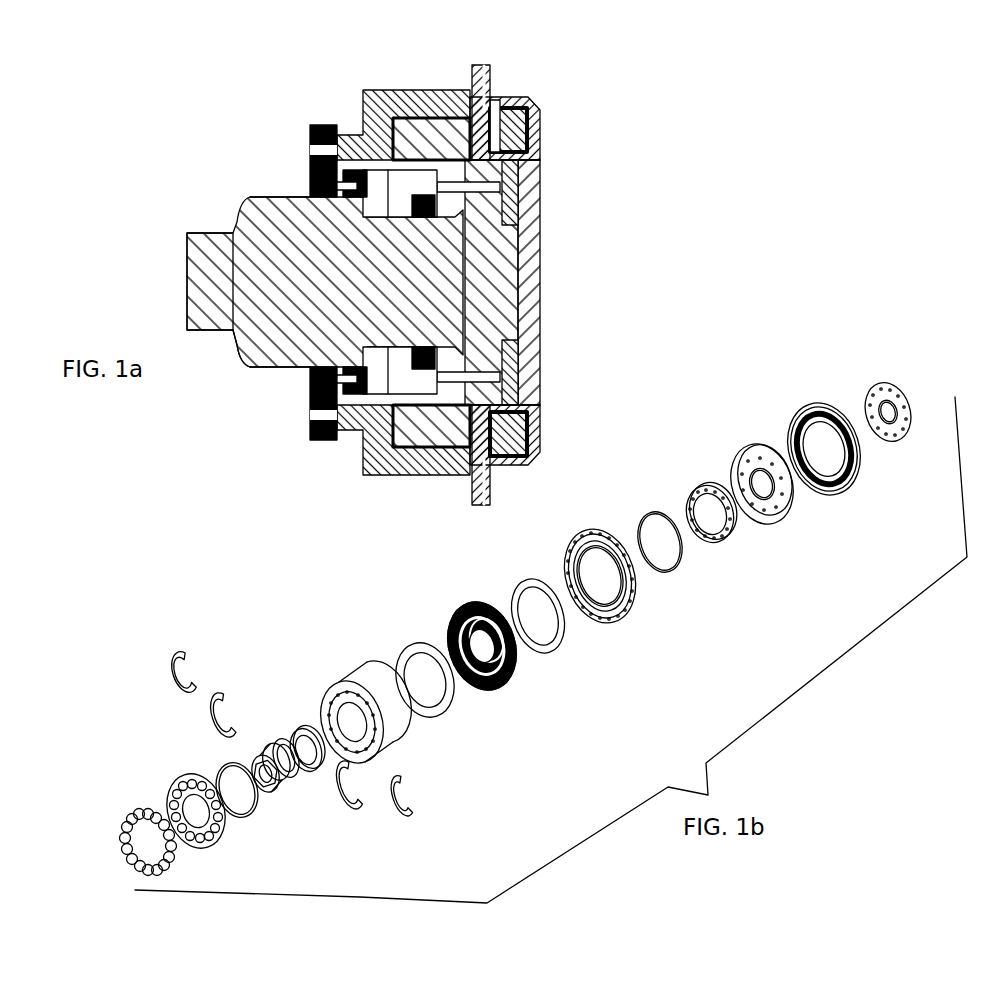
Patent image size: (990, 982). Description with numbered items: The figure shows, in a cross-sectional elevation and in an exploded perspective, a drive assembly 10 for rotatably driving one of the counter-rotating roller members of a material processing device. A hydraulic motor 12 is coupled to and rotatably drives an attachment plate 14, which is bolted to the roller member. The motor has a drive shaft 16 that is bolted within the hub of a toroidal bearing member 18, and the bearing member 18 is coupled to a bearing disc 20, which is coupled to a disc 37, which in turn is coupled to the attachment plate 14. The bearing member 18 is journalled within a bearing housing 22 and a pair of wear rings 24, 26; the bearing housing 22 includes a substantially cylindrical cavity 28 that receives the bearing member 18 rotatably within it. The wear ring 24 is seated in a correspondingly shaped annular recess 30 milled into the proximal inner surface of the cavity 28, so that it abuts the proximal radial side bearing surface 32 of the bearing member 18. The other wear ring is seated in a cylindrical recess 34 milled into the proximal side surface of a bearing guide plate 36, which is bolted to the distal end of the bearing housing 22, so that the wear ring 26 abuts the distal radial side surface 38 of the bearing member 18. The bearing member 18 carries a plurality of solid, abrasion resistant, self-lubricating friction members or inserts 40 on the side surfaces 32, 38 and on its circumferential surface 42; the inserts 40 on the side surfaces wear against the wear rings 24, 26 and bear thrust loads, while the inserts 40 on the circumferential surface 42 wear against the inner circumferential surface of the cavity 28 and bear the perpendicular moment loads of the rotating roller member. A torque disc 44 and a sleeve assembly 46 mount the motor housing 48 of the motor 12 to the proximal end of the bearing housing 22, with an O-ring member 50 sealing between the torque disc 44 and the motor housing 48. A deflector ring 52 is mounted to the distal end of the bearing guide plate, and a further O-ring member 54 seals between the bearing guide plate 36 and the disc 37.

In FIG. 1A, the drive assembly 10 is at (223, 92).
In FIG. 1A, the hydraulic motor 12 is at (238, 370).
In FIG. 1B, the hydraulic motor 12 is at (267, 713).
In FIG. 1A, the attachment plate 14 is at (593, 282).
In FIG. 1B, the attachment plate 14 is at (862, 385).
In FIG. 1A, the drive shaft 16 is at (325, 282).
In FIG. 1B, the drive shaft 16 is at (297, 717).
In FIG. 1A, the toroidal bearing member 18 is at (377, 423).
In FIG. 1B, the toroidal bearing member 18 is at (447, 617).
In FIG. 1A, the bearing disc 20 is at (502, 308).
In FIG. 1B, the bearing disc 20 is at (723, 553).
In FIG. 1A, the bearing housing 22 is at (423, 418).
In FIG. 1B, the bearing housing 22 is at (340, 662).
In FIG. 1A, the wear ring 24 is at (407, 407).
In FIG. 1B, the wear ring 24 is at (443, 717).
In FIG. 1A, the wear ring 26 is at (530, 458).
In FIG. 1B, the wear ring 26 is at (508, 578).
In FIG. 1A, the cylindrical cavity 28 is at (520, 235).
In FIG. 1A, the annular recess 30 is at (363, 103).
In FIG. 1B, the proximal radial side bearing surface 32 is at (478, 690).
In FIG. 1A, the cylindrical recess 34 is at (498, 103).
In FIG. 1B, the cylindrical recess 34 is at (607, 625).
In FIG. 1A, the bearing guide plate 36 is at (500, 85).
In FIG. 1B, the bearing guide plate 36 is at (615, 640).
In FIG. 1A, the disc 37 is at (520, 178).
In FIG. 1B, the disc 37 is at (733, 446).
In FIG. 1B, the distal radial side surface 38 is at (468, 600).
In FIG. 1A, the friction members or inserts 40 is at (478, 88).
In FIG. 1A, the circumferential surface 42 is at (518, 366).
In FIG. 1A, the torque disc 44 is at (303, 385).
In FIG. 1B, the torque disc 44 is at (168, 778).
In FIG. 1A, the sleeve assembly 46 is at (312, 135).
In FIG. 1B, the sleeve assembly 46 is at (130, 802).
In FIG. 1A, the motor housing 48 is at (210, 232).
In FIG. 1B, the motor housing 48 is at (293, 795).
In FIG. 1A, the O-ring member 50 is at (313, 178).
In FIG. 1B, the O-ring member 50 is at (213, 765).
In FIG. 1A, the deflector ring 52 is at (540, 100).
In FIG. 1B, the deflector ring 52 is at (790, 415).
In FIG. 1A, the O-ring member 54 is at (522, 155).
In FIG. 1B, the O-ring member 54 is at (637, 523).